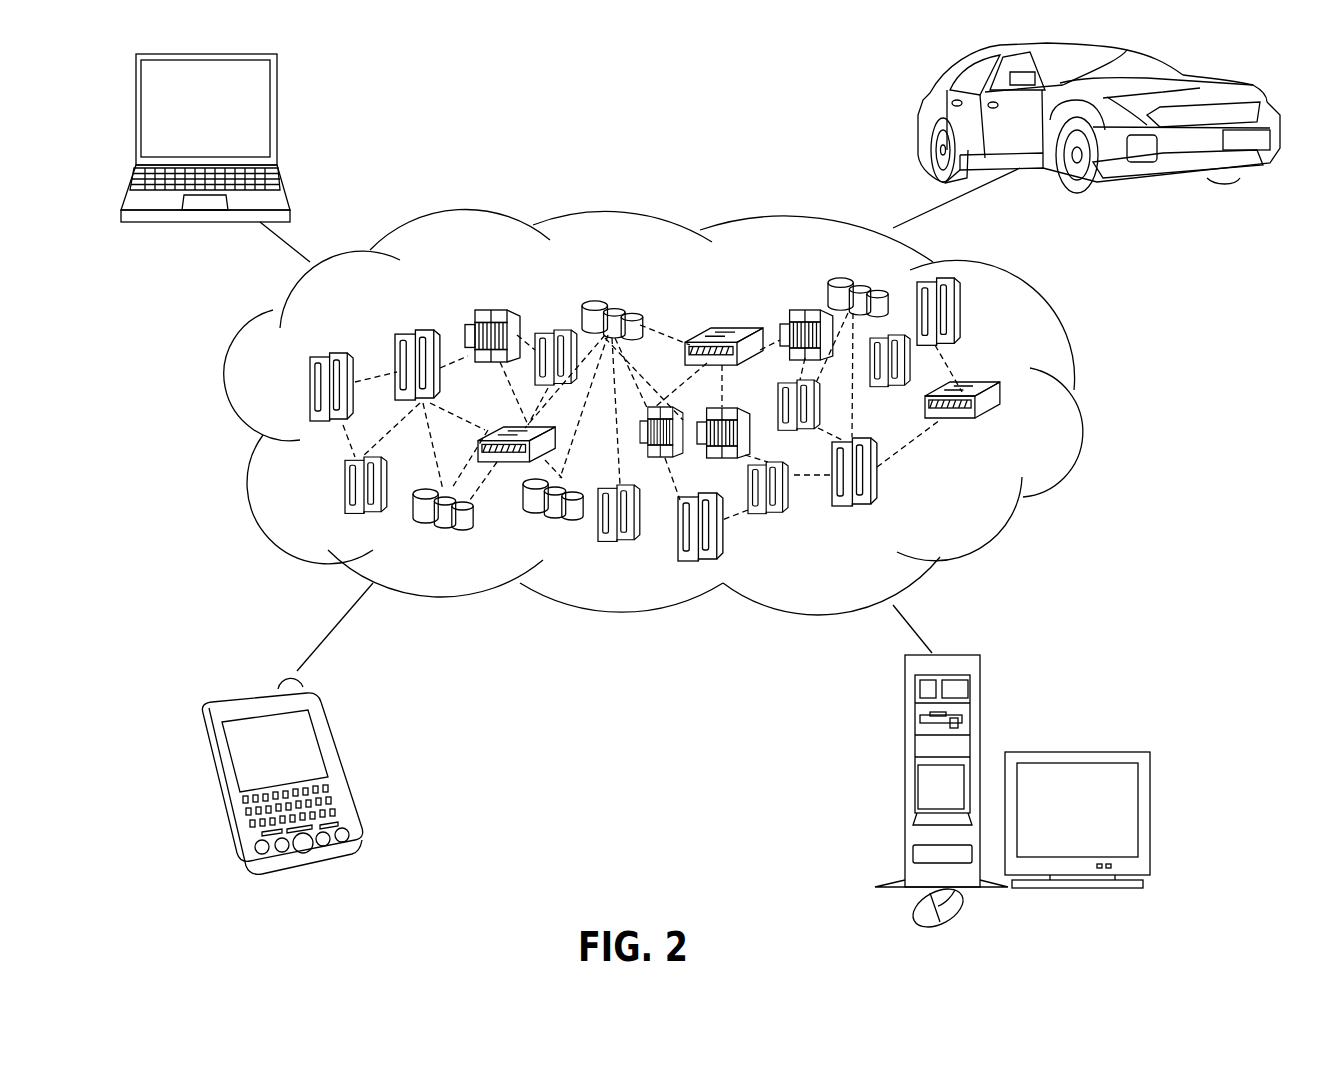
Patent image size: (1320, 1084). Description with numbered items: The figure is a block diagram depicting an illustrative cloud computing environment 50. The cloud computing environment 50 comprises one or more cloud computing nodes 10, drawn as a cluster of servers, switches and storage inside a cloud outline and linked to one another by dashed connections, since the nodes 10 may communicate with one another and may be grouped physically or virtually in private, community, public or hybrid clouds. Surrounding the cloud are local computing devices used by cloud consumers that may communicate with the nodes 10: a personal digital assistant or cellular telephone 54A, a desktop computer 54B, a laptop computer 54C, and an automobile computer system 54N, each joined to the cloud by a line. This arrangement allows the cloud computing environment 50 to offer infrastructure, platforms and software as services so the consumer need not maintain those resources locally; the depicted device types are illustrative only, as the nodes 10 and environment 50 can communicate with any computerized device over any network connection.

The cloud computing nodes 10 is at (984, 504).
The cloud computing environment 50 is at (1073, 402).
The personal digital assistant (PDA) or cellular telephone 54A is at (330, 732).
The desktop computer 54B is at (905, 717).
The laptop computer 54C is at (278, 93).
The automobile computer system 54N is at (918, 108).